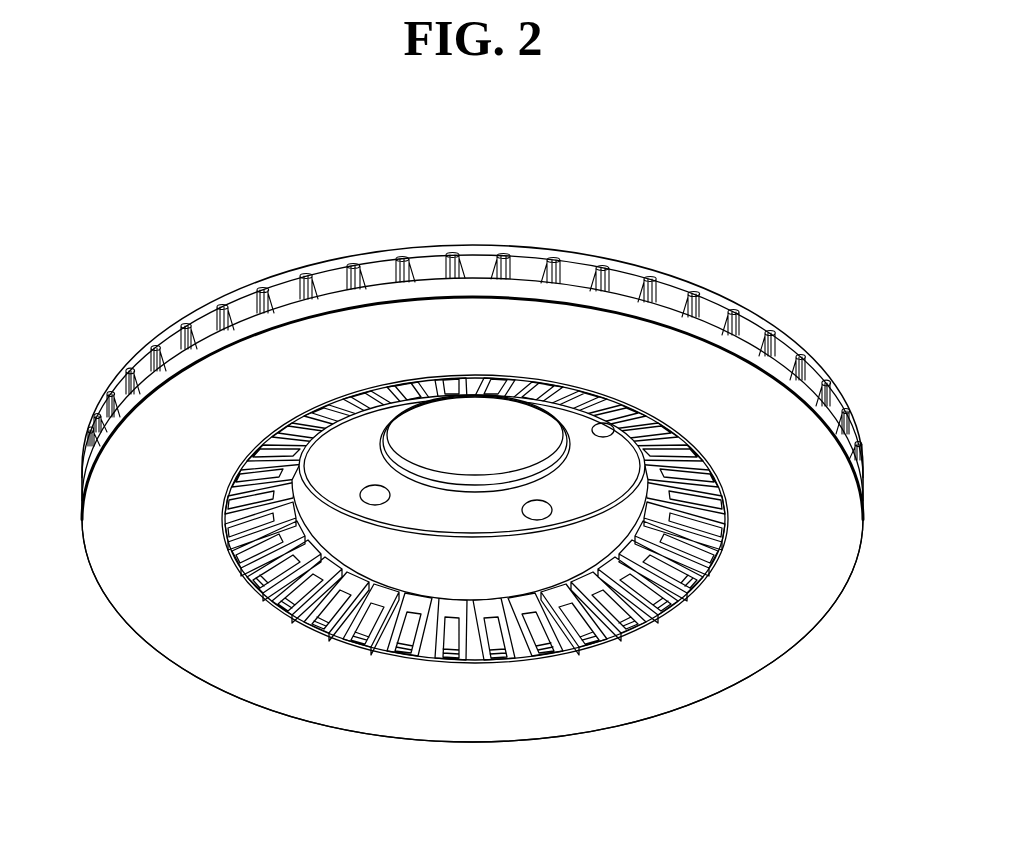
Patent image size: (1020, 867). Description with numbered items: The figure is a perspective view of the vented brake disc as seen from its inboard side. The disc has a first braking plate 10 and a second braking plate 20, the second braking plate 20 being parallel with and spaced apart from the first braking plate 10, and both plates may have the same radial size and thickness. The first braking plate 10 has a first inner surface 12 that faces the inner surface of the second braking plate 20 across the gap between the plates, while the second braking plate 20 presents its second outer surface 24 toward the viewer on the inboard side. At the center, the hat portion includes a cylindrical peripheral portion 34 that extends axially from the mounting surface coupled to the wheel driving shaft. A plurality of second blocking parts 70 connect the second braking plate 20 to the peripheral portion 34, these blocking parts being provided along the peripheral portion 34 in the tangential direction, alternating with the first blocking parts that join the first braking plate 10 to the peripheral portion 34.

The first braking plate 10 is at (692, 272).
The first inner surface 12 is at (378, 276).
The second braking plate 20 is at (687, 713).
The second outer surface 24 is at (523, 707).
The peripheral portion 34 is at (372, 537).
The second blocking part 70 is at (383, 633).